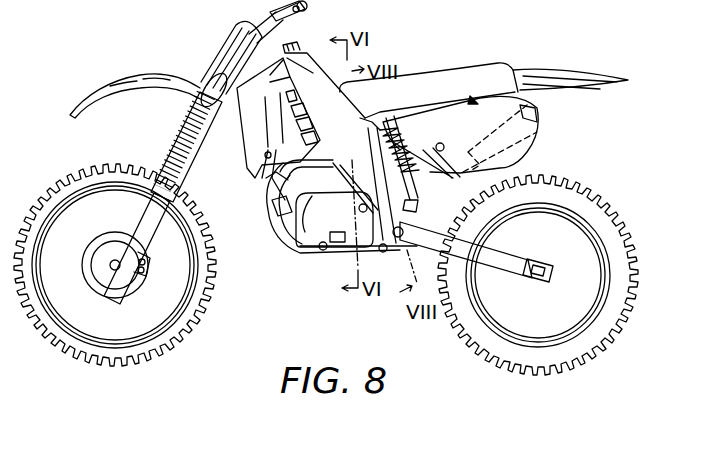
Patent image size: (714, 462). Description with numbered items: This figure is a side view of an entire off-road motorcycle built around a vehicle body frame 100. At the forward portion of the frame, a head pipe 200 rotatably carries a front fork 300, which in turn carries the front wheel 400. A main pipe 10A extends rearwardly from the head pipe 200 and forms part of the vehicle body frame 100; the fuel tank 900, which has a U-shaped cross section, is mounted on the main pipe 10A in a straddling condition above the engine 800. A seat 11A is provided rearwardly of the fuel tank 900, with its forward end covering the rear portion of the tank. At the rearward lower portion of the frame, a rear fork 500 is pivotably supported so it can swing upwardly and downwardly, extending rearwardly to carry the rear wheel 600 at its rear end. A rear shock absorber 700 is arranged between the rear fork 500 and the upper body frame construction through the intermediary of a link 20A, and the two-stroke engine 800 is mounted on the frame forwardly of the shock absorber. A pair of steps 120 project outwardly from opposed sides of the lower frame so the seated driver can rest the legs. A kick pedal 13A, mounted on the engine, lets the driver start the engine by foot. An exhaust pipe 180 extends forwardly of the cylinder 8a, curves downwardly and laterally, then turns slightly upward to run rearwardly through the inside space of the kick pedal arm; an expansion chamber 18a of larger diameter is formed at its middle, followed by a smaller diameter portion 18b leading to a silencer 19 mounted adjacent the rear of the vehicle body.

The head pipe 200 is at (230, 42).
The front fork 300 is at (140, 228).
The front wheel 400 is at (147, 350).
The rear fork 500 is at (512, 267).
The rear wheel 600 is at (485, 342).
The rear shock absorber 700 is at (403, 127).
The engine 800 is at (358, 250).
The fuel tank 900 is at (318, 87).
The main pipe 10A is at (272, 23).
The seat 11A is at (410, 83).
The silencer 19 is at (537, 117).
The smaller diameter portion 18b is at (500, 168).
The cylinder 8a is at (267, 180).
The kick pedal 13A is at (273, 203).
The exhaust pipe 180 is at (273, 247).
The vehicle body frame 100 is at (305, 253).
The steps 120 is at (363, 232).
The expansion chamber 18a is at (340, 237).
The link 20A is at (401, 275).